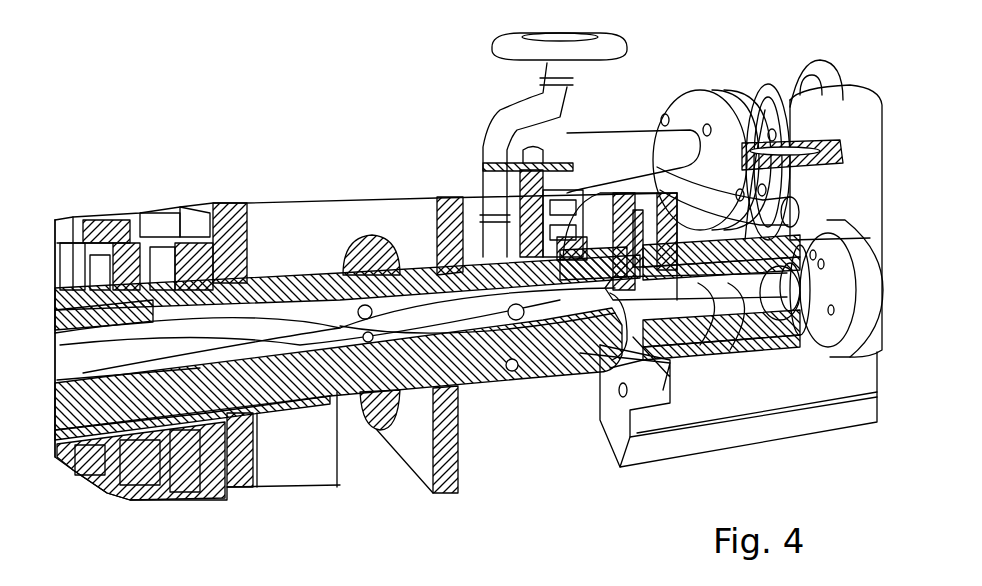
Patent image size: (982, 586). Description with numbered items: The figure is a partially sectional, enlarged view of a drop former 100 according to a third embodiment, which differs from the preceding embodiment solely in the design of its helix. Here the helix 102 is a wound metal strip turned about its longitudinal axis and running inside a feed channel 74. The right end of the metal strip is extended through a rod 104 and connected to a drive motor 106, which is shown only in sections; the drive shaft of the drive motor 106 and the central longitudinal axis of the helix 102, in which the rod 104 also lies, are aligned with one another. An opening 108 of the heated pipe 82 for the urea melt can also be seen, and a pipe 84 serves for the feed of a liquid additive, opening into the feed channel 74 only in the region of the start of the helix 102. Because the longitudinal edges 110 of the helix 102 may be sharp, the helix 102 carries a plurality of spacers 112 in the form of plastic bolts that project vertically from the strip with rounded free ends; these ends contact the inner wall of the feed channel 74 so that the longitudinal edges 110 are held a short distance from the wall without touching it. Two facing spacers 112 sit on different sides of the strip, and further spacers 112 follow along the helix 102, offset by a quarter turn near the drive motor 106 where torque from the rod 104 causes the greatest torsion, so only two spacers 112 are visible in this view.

The feed channel 74 is at (316, 318).
The heated pipe 82 is at (607, 150).
The pipe 84 is at (768, 153).
The drop former 100 is at (533, 452).
The helix 102 is at (541, 307).
The rod 104 is at (690, 290).
The drive motor 106 is at (850, 322).
The opening 108 is at (747, 297).
The longitudinal edges 110 is at (377, 307).
The spacers 112 is at (366, 305).